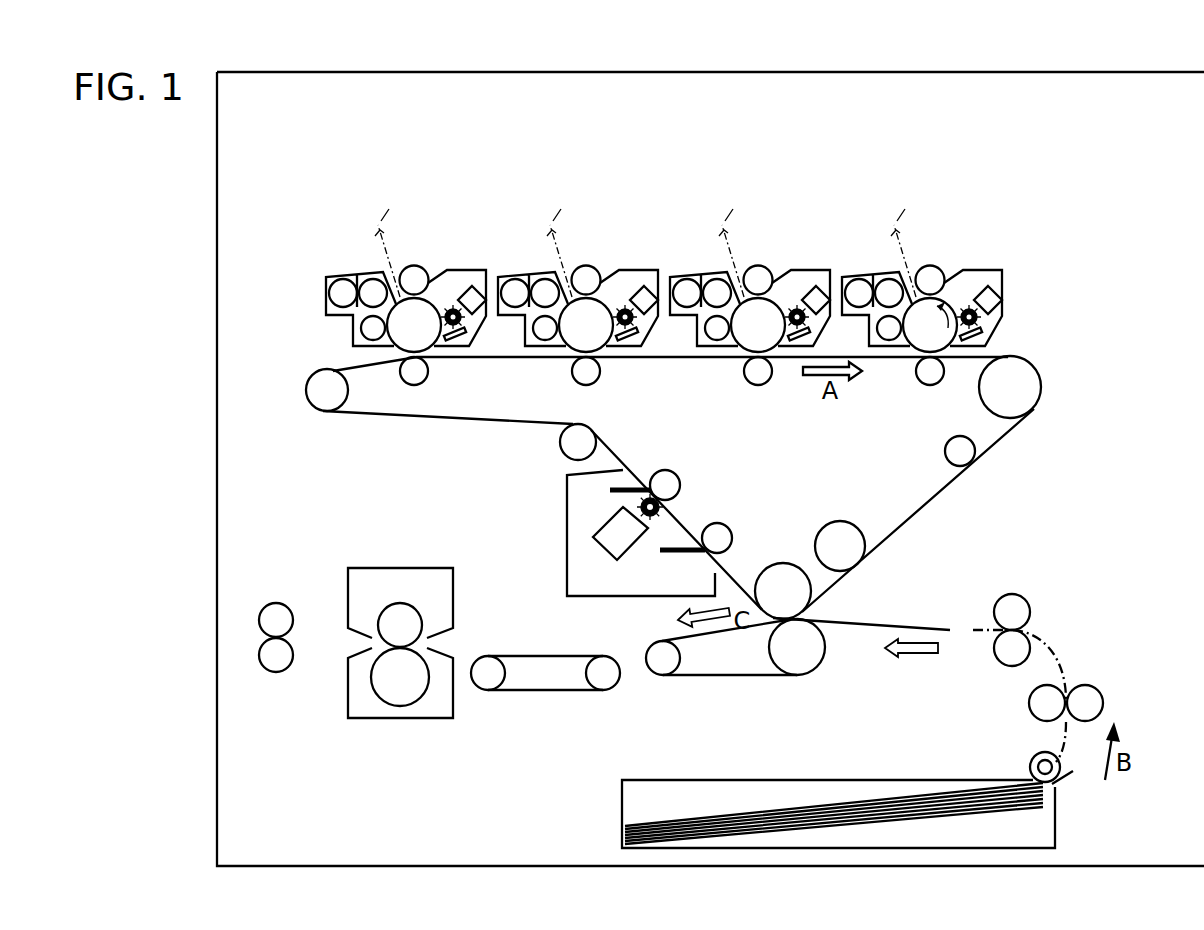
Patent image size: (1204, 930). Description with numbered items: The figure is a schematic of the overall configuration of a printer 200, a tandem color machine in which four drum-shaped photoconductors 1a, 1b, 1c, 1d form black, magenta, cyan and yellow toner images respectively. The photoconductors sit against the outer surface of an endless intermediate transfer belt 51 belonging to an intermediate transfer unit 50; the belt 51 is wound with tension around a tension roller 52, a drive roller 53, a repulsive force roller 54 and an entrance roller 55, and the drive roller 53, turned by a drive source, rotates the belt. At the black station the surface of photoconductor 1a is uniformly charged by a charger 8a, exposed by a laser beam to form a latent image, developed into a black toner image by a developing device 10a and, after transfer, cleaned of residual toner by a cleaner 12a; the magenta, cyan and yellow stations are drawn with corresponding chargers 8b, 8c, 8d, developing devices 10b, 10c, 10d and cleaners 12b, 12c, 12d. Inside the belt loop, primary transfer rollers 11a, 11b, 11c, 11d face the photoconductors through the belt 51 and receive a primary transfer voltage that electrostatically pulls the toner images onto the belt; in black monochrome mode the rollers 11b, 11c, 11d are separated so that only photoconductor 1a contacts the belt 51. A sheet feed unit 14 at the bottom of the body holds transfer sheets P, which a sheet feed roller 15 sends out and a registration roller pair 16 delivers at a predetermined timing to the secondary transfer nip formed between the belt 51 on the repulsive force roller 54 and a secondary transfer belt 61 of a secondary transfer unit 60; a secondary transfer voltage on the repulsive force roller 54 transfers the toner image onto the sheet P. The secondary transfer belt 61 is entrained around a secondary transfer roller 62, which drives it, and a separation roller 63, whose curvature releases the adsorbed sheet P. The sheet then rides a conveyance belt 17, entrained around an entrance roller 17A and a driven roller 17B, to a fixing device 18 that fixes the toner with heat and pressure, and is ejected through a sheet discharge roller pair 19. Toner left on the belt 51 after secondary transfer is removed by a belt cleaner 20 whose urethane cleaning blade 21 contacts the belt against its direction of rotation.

The printer 200 is at (333, 166).
The photoconductor 1a is at (922, 278).
The photoconductor 1b is at (750, 278).
The photoconductor 1c is at (578, 278).
The photoconductor 1d is at (406, 278).
The charger 8a is at (938, 262).
The charging roller 8b is at (767, 262).
The charging roller 8c is at (594, 262).
The charging roller 8d is at (414, 266).
The developing device 10a is at (867, 286).
The developing device 10b is at (695, 286).
The developing device 10c is at (523, 286).
The developing device 10d is at (350, 274).
The primary transfer roller 11a is at (900, 382).
The primary transfer roller 11b is at (728, 382).
The primary transfer roller 11c is at (556, 381).
The primary transfer roller 11d is at (416, 386).
The cleaner 12a is at (959, 372).
The cleaning blade 12b is at (790, 373).
The cleaning blade 12c is at (635, 367).
The cleaning blade 12d is at (459, 340).
The sheet feed unit 14 is at (1056, 820).
The sheet feed roller 15 is at (1034, 755).
The registration roller pair 16 is at (1014, 594).
The conveyance belt 17 is at (541, 703).
The entrance roller 17A is at (603, 691).
The driven roller 17B is at (488, 691).
The fixing device 18 is at (398, 568).
The sheet discharge roller pair 19 is at (276, 603).
The belt cleaner 20 is at (616, 553).
The cleaning blade 21 is at (677, 557).
The intermediate transfer unit 50 is at (692, 471).
The intermediate transfer belt 51 is at (951, 485).
The tension roller 52 is at (349, 391).
The drive roller 53 is at (1026, 368).
The repulsive force roller 54 is at (783, 563).
The entrance roller 55 is at (857, 529).
The secondary transfer unit 60 is at (756, 686).
The secondary transfer belt 61 is at (731, 677).
The secondary transfer roller 62 is at (817, 660).
The separation roller 63 is at (664, 676).
The transfer sheet P is at (908, 798).